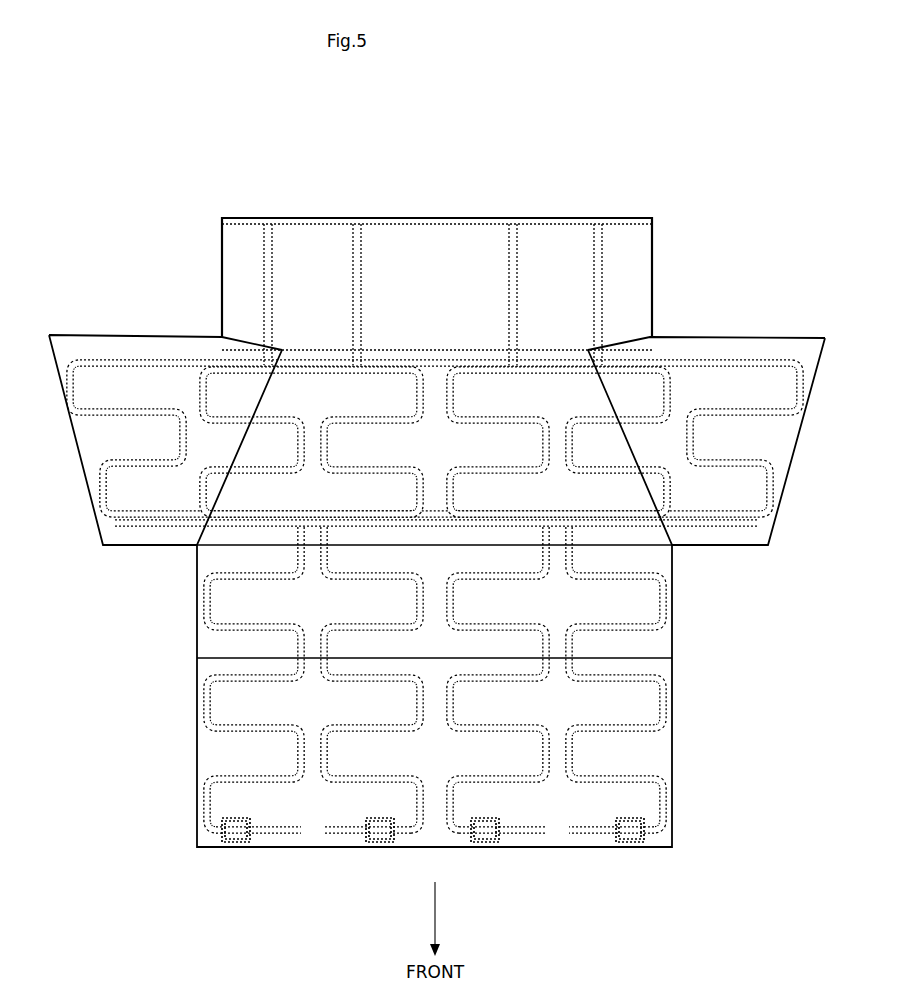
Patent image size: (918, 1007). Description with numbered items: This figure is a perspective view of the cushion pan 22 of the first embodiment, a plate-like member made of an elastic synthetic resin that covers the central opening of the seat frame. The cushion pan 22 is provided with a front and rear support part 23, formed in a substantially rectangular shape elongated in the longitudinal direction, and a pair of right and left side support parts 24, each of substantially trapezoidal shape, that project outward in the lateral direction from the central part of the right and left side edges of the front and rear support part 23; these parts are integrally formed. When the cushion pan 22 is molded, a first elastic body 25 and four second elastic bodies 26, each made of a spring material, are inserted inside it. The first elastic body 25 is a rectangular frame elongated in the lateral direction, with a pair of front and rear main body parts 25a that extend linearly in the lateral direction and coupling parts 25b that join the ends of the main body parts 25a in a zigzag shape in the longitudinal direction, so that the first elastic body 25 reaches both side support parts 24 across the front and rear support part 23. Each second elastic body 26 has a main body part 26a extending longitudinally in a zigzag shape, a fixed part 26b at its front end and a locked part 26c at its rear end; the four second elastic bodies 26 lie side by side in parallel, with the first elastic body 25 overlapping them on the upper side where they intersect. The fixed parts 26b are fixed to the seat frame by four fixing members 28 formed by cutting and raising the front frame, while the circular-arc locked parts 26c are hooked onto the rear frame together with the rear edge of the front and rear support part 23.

The cushion pan 22 is at (437, 238).
The front and rear support part 23 is at (433, 826).
The side support part 24 is at (143, 538).
The first elastic body 25 is at (434, 442).
The main body part 25a is at (342, 356).
The coupling part 25b is at (120, 418).
The second elastic body 26 is at (436, 708).
The main body part 26a is at (380, 673).
The fixed part 26b is at (351, 818).
The locked part 26c is at (268, 216).
The fixing member 28 is at (239, 839).